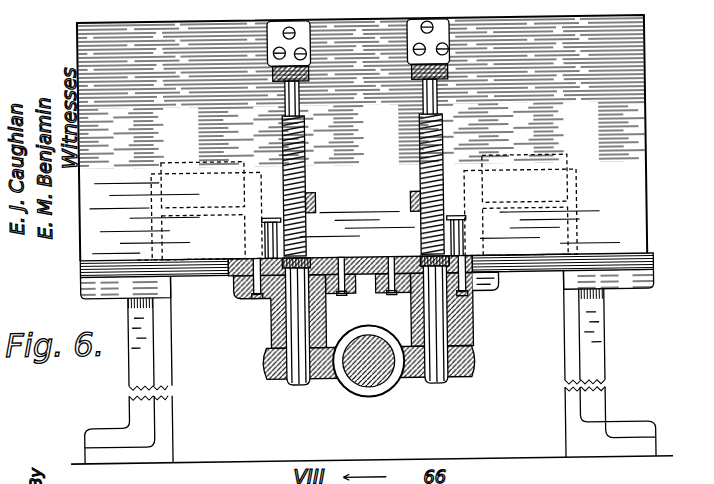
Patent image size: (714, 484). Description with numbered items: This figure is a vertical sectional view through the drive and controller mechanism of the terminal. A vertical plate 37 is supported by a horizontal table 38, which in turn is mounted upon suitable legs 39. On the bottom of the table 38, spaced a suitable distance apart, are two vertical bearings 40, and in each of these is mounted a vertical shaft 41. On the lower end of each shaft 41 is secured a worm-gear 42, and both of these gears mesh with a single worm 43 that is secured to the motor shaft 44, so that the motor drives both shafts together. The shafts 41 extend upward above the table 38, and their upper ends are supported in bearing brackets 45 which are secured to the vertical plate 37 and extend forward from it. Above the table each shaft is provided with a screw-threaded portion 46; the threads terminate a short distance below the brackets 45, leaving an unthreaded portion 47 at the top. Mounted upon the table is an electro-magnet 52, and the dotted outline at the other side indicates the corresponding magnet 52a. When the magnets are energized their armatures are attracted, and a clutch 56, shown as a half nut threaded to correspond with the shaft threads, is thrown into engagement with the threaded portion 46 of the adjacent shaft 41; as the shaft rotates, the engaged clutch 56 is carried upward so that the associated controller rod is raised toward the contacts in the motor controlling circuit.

The vertical plate 37 is at (652, 157).
The horizontal table 38 is at (655, 258).
The legs 39 is at (582, 367).
The vertical bearings 40 is at (272, 318).
The vertical shaft 41 is at (295, 333).
The worm-gear 42 is at (268, 373).
The worm 43 is at (393, 393).
The motor shaft 44 is at (346, 386).
The bearing brackets 45 is at (270, 62).
The screw-threaded portions 46 is at (307, 158).
The unthreaded portion 47 is at (303, 98).
The electro-magnet 52 is at (544, 157).
The bracket 52a is at (223, 161).
The clutch 56 is at (411, 200).